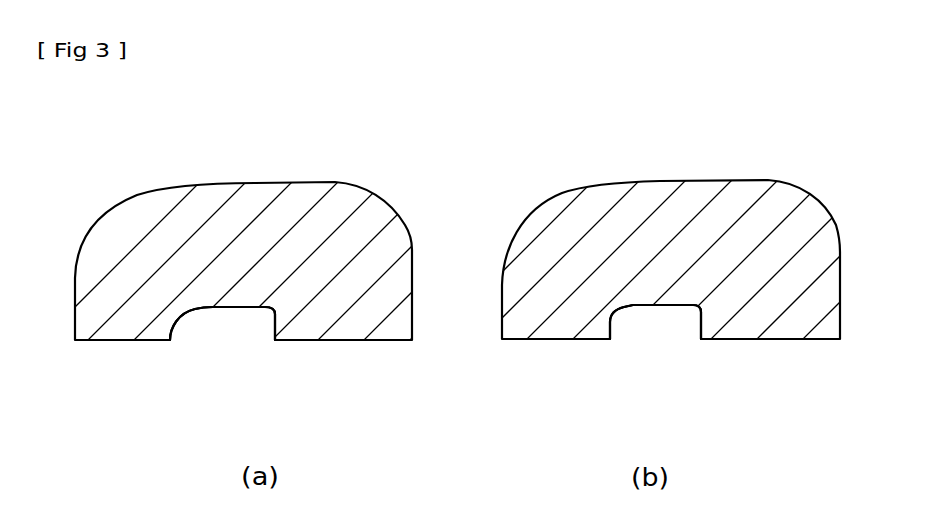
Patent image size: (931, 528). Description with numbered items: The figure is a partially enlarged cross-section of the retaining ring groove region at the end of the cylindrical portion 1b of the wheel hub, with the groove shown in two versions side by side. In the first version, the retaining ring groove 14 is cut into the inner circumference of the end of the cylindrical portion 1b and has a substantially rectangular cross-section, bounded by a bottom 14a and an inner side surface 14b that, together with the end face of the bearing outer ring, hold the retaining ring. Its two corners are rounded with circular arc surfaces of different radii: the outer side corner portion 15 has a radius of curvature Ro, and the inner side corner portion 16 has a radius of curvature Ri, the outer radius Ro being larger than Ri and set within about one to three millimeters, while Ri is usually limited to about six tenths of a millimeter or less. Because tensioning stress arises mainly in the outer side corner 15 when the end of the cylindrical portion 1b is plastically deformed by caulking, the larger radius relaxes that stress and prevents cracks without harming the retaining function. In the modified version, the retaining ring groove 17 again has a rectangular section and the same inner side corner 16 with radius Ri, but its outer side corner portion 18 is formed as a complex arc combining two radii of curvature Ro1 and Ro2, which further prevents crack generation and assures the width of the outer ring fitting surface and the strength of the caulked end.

The cylindrical portion 1b is at (167, 212).
The retaining ring groove 14 is at (222, 340).
The bottom of the retaining ring groove 14a is at (230, 309).
The inner side surface of the groove 14b is at (280, 322).
The outer side corner portion 15 is at (219, 309).
The inner side corner portion 16 is at (279, 317).
The retaining ring groove 17 is at (651, 343).
The outer side corner portion 18 is at (643, 307).
The radius of curvature of the inner side corner Ri is at (254, 321).
The radius of curvature of the outer side corner Ro is at (198, 331).
The first radius of curvature of the complex outer corner Ro1 is at (631, 328).
The second radius of curvature of the complex outer corner Ro2 is at (632, 328).